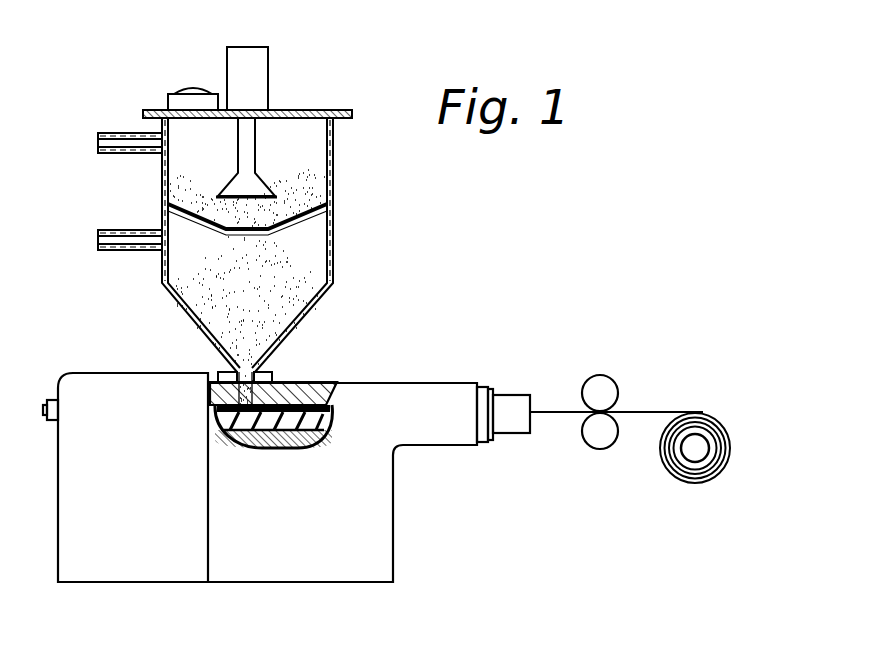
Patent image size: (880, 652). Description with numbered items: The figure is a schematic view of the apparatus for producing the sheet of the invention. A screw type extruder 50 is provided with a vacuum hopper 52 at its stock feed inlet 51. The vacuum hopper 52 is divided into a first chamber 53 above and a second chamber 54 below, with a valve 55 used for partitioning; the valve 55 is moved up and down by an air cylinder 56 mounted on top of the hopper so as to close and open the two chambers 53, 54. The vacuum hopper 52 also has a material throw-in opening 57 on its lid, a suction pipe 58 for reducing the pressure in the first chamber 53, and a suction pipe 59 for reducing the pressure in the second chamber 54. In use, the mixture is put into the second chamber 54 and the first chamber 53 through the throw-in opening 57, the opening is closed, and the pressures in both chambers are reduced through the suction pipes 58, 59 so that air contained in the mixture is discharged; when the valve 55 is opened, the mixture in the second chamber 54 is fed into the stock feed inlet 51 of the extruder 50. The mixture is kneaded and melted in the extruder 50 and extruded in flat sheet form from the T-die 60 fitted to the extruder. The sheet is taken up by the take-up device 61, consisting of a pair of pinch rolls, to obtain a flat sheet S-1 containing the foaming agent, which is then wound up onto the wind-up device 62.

The screw type extruder 50 is at (387, 398).
The stock feed inlet 51 is at (275, 382).
The vacuum hopper 52 is at (328, 230).
The first chamber 53 is at (308, 148).
The second chamber 54 is at (297, 290).
The valve 55 is at (240, 190).
The air cylinder 56 is at (255, 82).
The material throw-in opening 57 is at (190, 92).
The suction pipe 58 is at (98, 137).
The suction pipe 59 is at (97, 238).
The T-die 60 is at (512, 407).
The take-up device 61 is at (600, 390).
The wind-up device 62 is at (688, 448).
The flat sheet S-1 is at (640, 410).